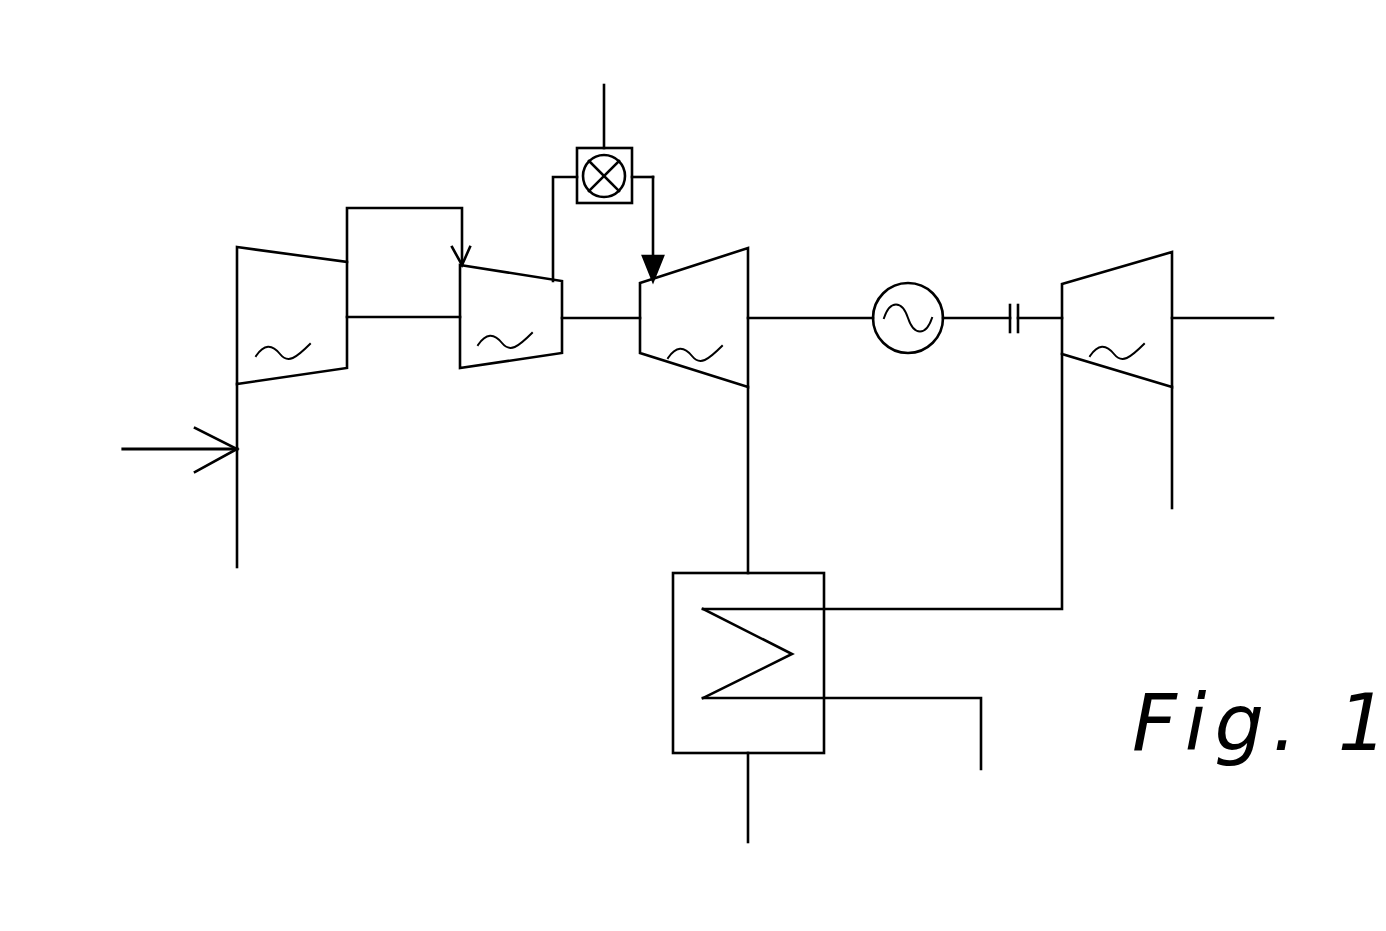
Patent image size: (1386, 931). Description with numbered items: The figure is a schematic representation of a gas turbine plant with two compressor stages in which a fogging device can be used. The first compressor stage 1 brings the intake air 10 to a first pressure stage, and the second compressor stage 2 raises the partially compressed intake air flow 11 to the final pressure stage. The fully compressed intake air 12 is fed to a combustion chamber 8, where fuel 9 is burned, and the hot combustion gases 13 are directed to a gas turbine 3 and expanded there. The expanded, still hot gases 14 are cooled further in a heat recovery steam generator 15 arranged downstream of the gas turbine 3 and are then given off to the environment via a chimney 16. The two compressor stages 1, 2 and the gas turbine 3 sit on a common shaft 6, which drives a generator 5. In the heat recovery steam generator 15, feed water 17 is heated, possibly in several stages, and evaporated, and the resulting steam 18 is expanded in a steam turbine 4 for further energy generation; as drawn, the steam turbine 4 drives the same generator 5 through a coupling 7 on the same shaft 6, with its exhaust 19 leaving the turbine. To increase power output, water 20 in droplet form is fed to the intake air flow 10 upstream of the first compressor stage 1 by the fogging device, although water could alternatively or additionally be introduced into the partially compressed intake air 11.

The first compressor stage 1 is at (292, 315).
The second compressor stage 2 is at (511, 316).
The gas turbine 3 is at (694, 317).
The steam turbine 4 is at (1167, 319).
The generator 5 is at (913, 282).
The common shaft 6 is at (805, 315).
The coupling 7 is at (1013, 298).
The combustion chamber 8 is at (627, 147).
The fuel 9 is at (603, 118).
The intake air 10 is at (237, 552).
The partially compressed intake air flow 11 is at (358, 206).
The fully compressed intake air 12 is at (550, 223).
The hot combustion gases 13 is at (657, 203).
The expanded hot gases 14 is at (750, 504).
The heat recovery steam generator 15 is at (610, 756).
The chimney 16 is at (746, 801).
The feed water 17 is at (874, 699).
The steam 18 is at (890, 607).
The steam turbine exhaust 19 is at (1172, 442).
The water 20 is at (172, 447).